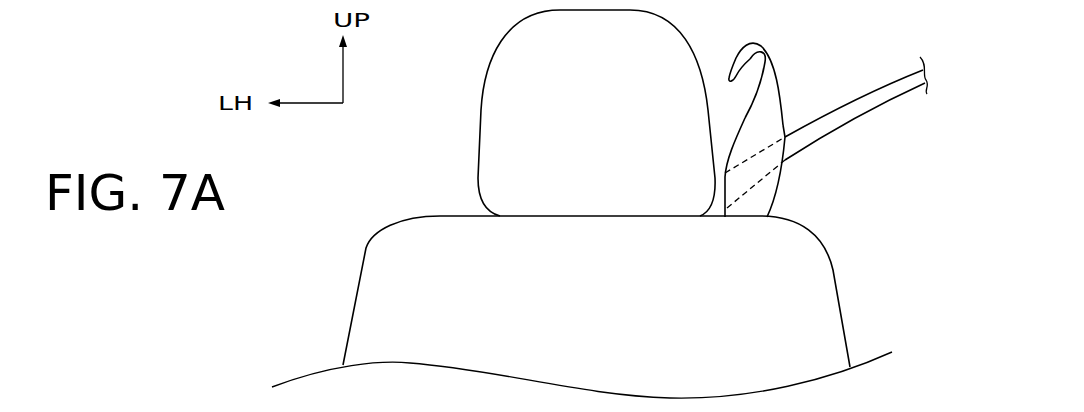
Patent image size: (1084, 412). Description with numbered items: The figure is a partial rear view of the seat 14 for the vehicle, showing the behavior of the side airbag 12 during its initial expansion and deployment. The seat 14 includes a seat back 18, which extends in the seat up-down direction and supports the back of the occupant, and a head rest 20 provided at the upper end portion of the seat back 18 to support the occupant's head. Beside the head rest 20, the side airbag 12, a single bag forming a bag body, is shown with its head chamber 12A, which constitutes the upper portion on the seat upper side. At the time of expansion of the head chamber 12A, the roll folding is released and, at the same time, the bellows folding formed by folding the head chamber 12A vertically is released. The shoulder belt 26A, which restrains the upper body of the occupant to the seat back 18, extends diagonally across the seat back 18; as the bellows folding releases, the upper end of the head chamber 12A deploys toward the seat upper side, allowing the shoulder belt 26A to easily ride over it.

The side airbag 12 is at (780, 182).
The head chamber 12A is at (770, 110).
The seat for the vehicle 14 is at (340, 332).
The seat back 18 is at (358, 270).
The head rest 20 is at (483, 88).
The shoulder belt 26A is at (860, 115).